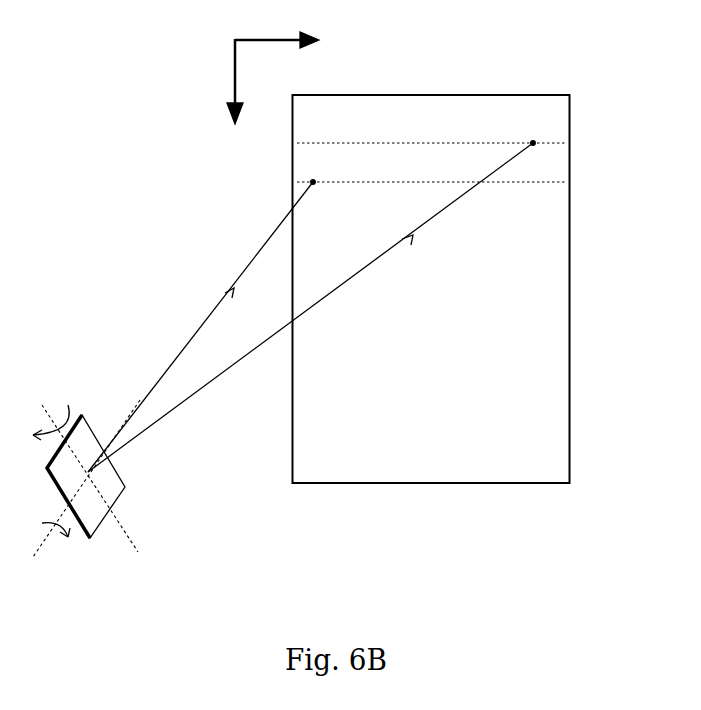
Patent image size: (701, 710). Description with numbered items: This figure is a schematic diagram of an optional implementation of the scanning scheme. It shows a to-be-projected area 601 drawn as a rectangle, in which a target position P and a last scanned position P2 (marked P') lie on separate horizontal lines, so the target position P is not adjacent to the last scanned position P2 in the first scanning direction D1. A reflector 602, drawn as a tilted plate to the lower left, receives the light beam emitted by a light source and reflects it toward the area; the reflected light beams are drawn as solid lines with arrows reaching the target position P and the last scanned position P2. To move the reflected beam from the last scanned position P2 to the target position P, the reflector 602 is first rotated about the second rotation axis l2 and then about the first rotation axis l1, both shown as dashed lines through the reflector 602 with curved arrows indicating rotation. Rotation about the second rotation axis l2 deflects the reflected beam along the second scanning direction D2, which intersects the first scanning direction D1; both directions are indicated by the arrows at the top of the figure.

The to-be-projected area 601 is at (465, 289).
The reflector 602 is at (113, 488).
The target position P is at (431, 167).
The last scanned position P2 is at (431, 130).
The first rotation axis l1 is at (94, 491).
The second rotation axis l2 is at (157, 522).
The first scanning direction D1 is at (277, 31).
The second scanning direction D2 is at (221, 81).